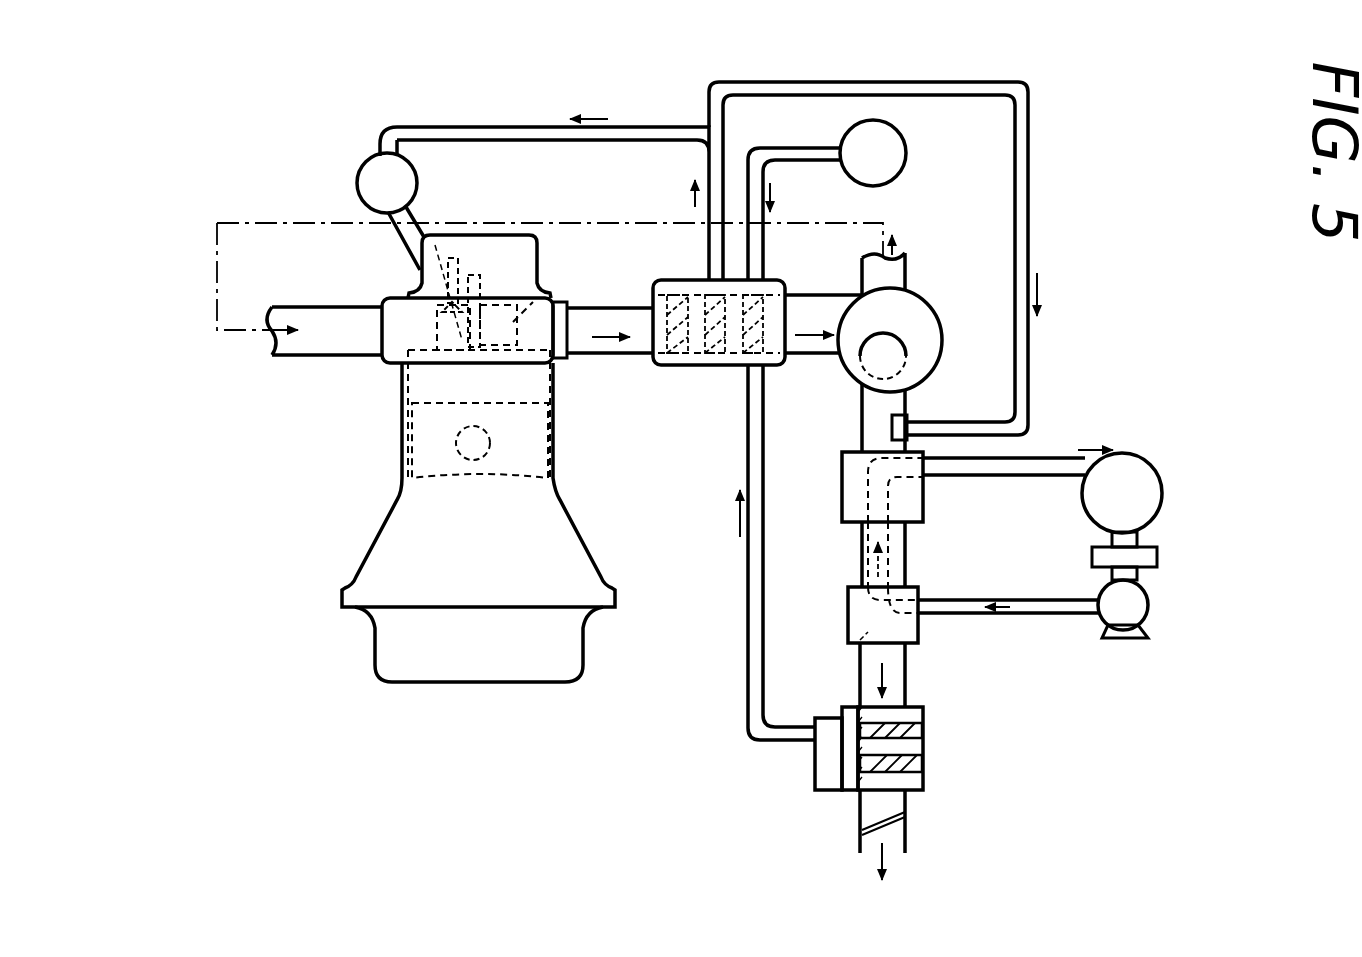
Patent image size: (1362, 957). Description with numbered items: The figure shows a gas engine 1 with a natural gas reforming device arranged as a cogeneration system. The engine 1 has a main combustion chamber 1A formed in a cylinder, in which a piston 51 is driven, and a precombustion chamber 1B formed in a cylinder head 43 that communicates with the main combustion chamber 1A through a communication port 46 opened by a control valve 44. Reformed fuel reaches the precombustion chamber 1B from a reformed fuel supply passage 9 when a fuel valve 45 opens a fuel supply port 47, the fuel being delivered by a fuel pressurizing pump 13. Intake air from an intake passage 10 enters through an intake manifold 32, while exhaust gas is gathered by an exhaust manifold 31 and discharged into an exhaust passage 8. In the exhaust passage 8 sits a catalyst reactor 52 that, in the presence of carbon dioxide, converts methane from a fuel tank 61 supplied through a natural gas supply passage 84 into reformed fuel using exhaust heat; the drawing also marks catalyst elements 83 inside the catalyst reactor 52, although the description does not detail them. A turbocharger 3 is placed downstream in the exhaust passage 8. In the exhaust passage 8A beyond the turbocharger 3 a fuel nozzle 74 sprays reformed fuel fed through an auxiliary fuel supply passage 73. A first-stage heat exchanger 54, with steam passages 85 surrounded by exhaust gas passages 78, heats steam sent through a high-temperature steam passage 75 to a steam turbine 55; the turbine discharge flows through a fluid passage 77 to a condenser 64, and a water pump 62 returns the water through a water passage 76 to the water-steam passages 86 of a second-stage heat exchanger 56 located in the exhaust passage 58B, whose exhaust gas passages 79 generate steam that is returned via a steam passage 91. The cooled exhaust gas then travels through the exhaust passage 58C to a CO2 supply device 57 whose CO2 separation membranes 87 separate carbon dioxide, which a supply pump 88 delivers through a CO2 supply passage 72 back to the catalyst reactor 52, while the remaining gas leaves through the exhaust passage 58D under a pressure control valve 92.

The gas engine 1 is at (382, 396).
The main combustion chamber 1A is at (523, 388).
The precombustion chamber 1B is at (545, 287).
The turbocharger 3 is at (915, 322).
The exhaust passage 8 is at (626, 305).
The exhaust passage 8A is at (862, 410).
The reformed fuel supply passage 9 is at (487, 126).
The intake passage 10 is at (242, 222).
The fuel pressurizing pump 13 is at (372, 170).
The exhaust manifold 31 is at (562, 330).
The intake manifold 32 is at (390, 350).
The cylinder head 43 is at (410, 317).
The control valve 44 is at (487, 340).
The fuel valve 45 is at (455, 303).
The communication port 46 is at (485, 353).
The fuel supply port 47 is at (455, 312).
The piston 51 is at (520, 450).
The catalyst reactor 52 is at (703, 366).
The first-stage heat exchanger 54 is at (856, 494).
The steam turbine 55 is at (1140, 488).
The second-stage heat exchanger 56 is at (858, 619).
The CO2 supply device 57 is at (932, 792).
The exhaust passage 58B is at (898, 566).
The exhaust passage 58C is at (897, 681).
The exhaust passage 58D is at (875, 803).
The fuel tank 61 is at (890, 150).
The water pump 62 is at (1136, 606).
The condenser 64 is at (1145, 558).
The CO2 supply passage 72 is at (750, 599).
The auxiliary fuel supply passage 73 is at (1022, 194).
The fuel nozzle 74 is at (905, 423).
The high-temperature steam passage 75 is at (1052, 465).
The water passage 76 is at (1050, 614).
The fluid passage 77 is at (1130, 540).
The exhaust gas passages 78 is at (853, 470).
The exhaust gas passages 79 is at (858, 635).
The catalyst element 83 is at (676, 298).
The natural gas supply passage 84 is at (781, 152).
The steam passages 85 is at (882, 500).
The water-steam passages 86 is at (860, 590).
The CO2 separation membranes 87 is at (917, 733).
The supply pump 88 is at (828, 768).
The steam passage 91 is at (880, 537).
The pressure control valve 92 is at (900, 823).